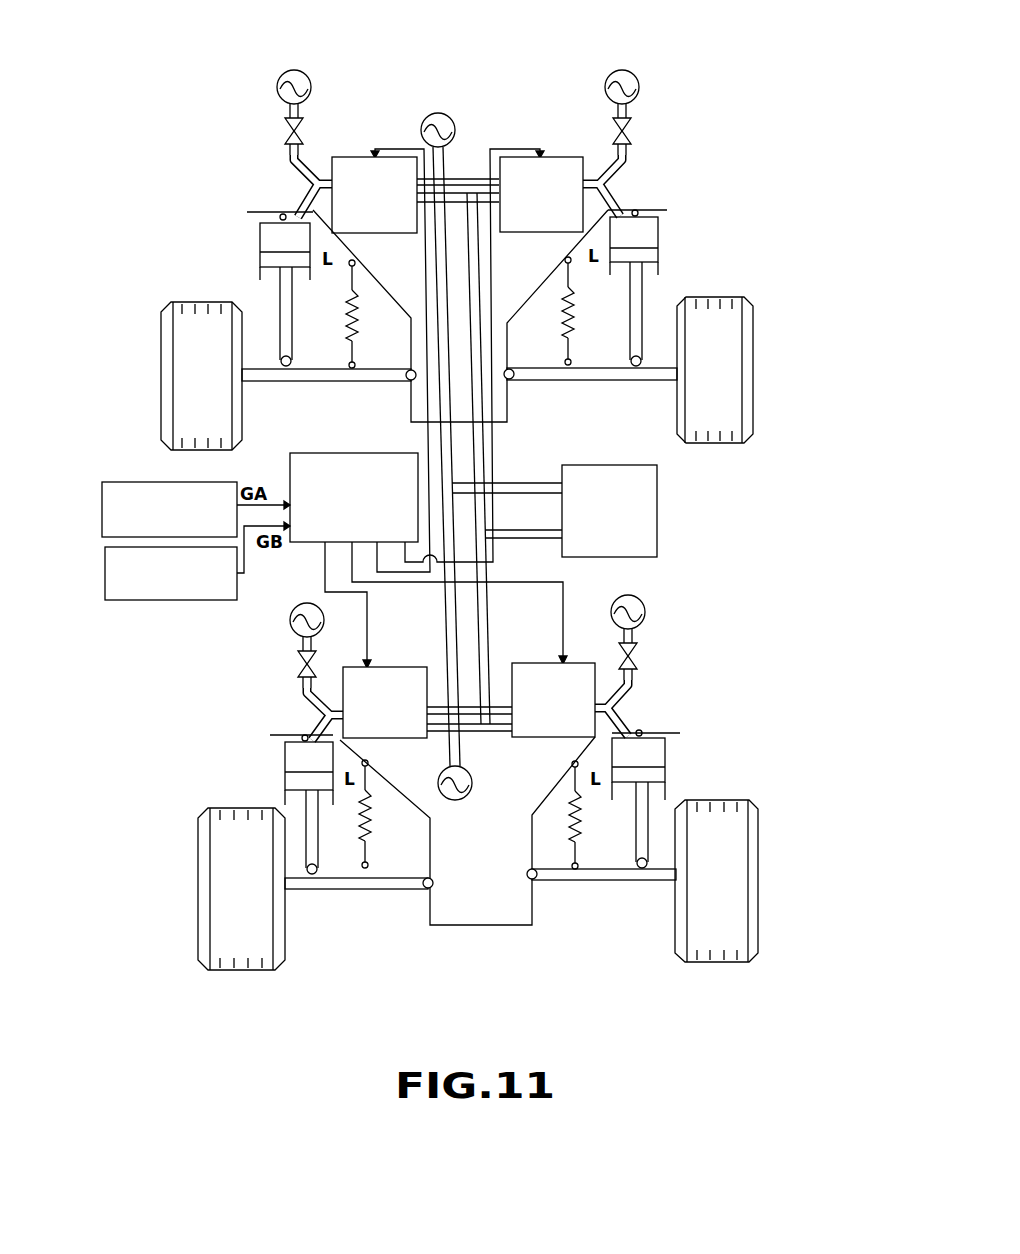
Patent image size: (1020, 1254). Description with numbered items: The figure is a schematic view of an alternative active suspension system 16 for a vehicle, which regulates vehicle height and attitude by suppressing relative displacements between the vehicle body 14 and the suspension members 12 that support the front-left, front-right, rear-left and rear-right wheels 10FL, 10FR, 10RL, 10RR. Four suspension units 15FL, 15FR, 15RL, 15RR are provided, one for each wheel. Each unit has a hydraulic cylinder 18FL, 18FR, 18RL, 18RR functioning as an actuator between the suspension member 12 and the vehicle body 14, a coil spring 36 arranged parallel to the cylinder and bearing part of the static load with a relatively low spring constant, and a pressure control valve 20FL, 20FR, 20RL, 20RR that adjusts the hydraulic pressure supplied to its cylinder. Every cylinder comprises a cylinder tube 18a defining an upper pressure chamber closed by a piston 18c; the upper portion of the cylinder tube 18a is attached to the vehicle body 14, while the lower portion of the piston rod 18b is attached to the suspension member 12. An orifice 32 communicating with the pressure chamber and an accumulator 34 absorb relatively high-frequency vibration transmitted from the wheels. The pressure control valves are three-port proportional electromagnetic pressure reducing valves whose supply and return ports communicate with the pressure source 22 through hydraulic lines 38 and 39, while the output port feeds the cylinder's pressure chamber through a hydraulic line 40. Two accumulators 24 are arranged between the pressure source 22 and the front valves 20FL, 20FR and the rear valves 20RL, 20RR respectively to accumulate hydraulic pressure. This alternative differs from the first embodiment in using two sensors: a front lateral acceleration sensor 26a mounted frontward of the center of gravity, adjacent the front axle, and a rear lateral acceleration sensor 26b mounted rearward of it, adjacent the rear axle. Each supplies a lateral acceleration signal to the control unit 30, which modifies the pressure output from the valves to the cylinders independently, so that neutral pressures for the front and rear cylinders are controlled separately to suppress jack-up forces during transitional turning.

The front-left wheel 10FL is at (165, 302).
The front-right wheel 10FR is at (740, 395).
The rear-left wheel 10RL is at (222, 898).
The rear-right wheel 10RR is at (743, 918).
The suspension member 12 is at (352, 383).
The vehicle body 14 is at (507, 425).
The front-left suspension unit 15FL is at (142, 254).
The front-right suspension unit 15FR is at (794, 281).
The rear-left suspension unit 15RL is at (190, 780).
The rear-right suspension unit 15RR is at (836, 796).
The active suspension system 16 is at (657, 532).
The front-left hydraulic cylinder 18FL is at (260, 238).
The front-right hydraulic cylinder 18FR is at (658, 242).
The rear-left hydraulic cylinder 18RL is at (285, 758).
The rear-right hydraulic cylinder 18RR is at (665, 762).
The cylinder tube 18a is at (250, 212).
The piston rod 18b is at (280, 360).
The piston 18c is at (262, 276).
The front-left pressure control valve 20FL is at (352, 157).
The front-right pressure control valve 20FR is at (530, 157).
The rear-left pressure control valve 20RL is at (408, 667).
The rear-right pressure control valve 20RR is at (532, 663).
The pressure source 22 is at (657, 480).
The accumulator 24 is at (440, 113).
The front lateral acceleration sensor 26a is at (150, 482).
The rear lateral acceleration sensor 26b is at (182, 601).
The control unit 30 is at (338, 453).
The orifice 32 is at (284, 131).
The accumulator 34 is at (303, 70).
The coil spring 36 is at (346, 304).
The hydraulic line 38 is at (518, 483).
The hydraulic line 39 is at (518, 530).
The hydraulic line 40 is at (310, 190).